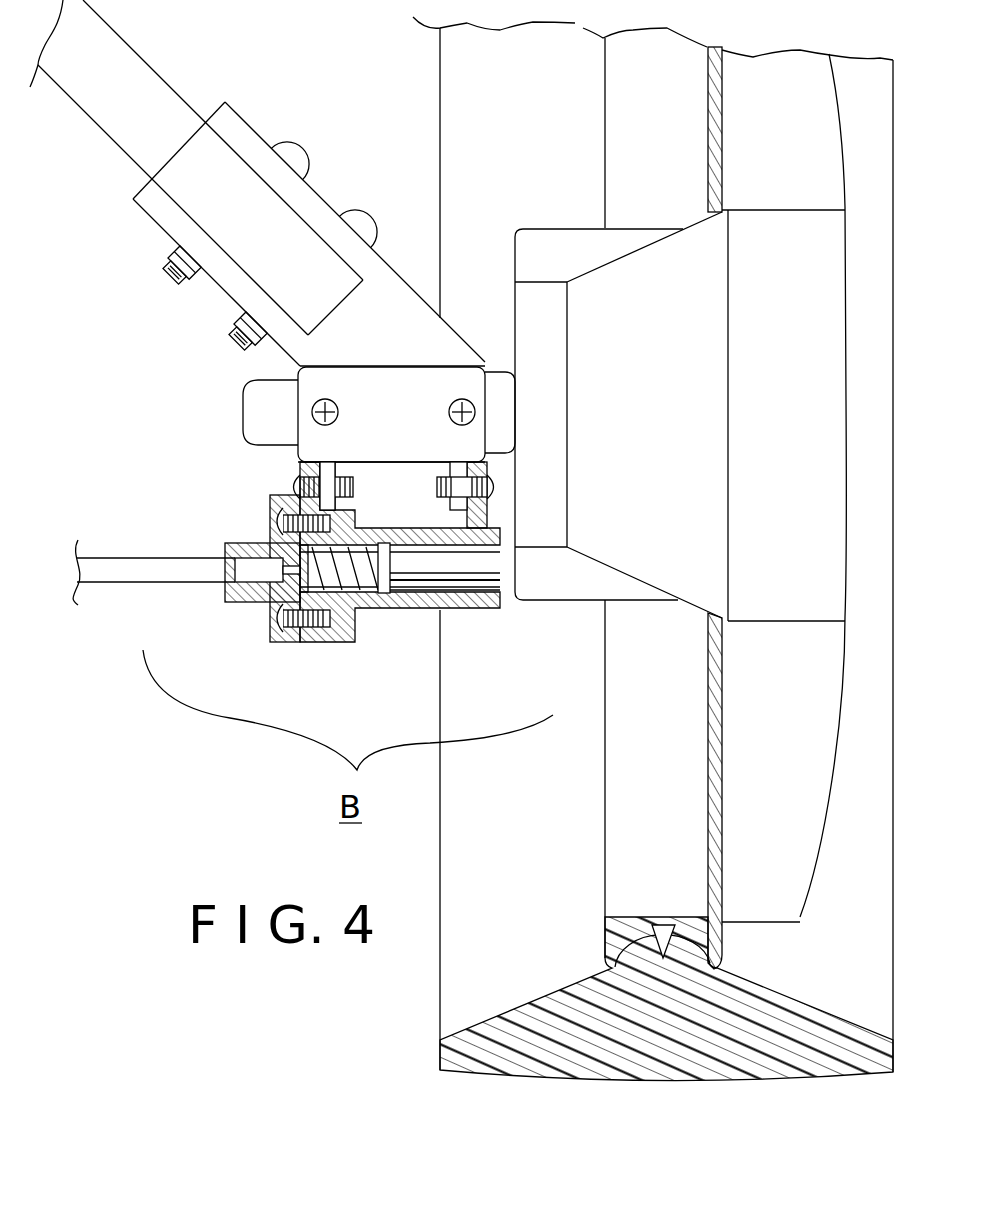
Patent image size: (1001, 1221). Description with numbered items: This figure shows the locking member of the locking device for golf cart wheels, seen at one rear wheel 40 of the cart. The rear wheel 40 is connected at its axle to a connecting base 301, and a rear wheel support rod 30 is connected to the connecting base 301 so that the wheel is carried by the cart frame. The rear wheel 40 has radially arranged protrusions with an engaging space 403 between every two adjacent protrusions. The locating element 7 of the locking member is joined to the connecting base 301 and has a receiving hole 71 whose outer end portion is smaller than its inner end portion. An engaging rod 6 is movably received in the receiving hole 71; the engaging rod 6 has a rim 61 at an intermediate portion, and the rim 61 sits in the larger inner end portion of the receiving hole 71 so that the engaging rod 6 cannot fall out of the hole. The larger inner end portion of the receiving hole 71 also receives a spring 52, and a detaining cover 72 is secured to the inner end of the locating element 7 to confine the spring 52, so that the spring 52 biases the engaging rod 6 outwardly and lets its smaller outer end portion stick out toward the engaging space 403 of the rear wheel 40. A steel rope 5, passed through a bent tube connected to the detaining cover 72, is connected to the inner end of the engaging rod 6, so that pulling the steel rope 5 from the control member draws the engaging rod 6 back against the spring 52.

The rear wheel support rod 30 is at (182, 97).
The connecting base 301 is at (382, 405).
The rear wheel 40 is at (630, 128).
The engaging space 403 is at (556, 582).
The steel rope 5 is at (190, 574).
The detaining cover 72 is at (260, 594).
The spring 52 is at (320, 608).
The locating element 7 is at (487, 608).
The rim 61 is at (398, 566).
The receiving hole 71 is at (420, 582).
The engaging rod 6 is at (450, 570).